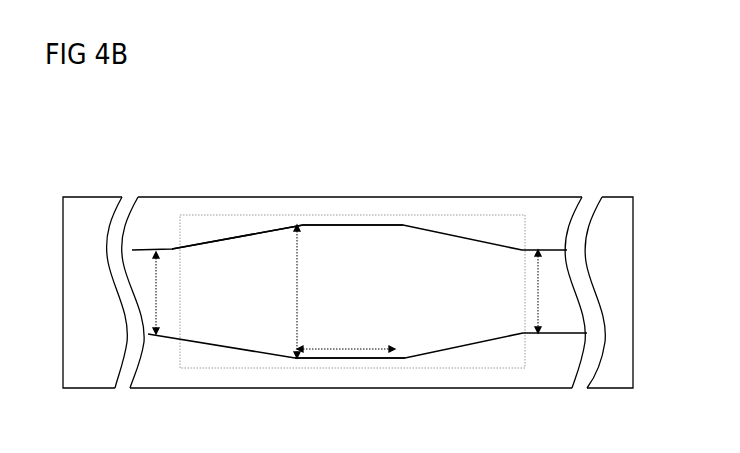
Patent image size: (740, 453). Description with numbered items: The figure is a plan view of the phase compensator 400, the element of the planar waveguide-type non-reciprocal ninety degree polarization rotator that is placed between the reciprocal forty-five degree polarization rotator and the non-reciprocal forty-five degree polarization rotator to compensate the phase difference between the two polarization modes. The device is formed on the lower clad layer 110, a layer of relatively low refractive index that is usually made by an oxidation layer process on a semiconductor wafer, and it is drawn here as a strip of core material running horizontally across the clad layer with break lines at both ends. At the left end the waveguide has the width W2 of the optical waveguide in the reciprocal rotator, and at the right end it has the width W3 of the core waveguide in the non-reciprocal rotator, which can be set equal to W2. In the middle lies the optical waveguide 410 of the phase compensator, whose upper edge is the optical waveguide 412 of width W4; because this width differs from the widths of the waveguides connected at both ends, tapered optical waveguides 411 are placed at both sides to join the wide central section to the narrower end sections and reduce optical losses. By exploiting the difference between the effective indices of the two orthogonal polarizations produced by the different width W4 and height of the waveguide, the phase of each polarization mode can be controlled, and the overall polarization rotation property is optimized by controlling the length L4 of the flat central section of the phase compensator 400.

The lower clad layer 110 is at (348, 292).
The phase compensator 400 is at (340, 215).
The optical waveguide 410 is at (350, 322).
The tapered optical waveguide 411 is at (227, 240).
The optical waveguide 412 is at (370, 225).
The width W2 is at (171, 293).
The width W3 is at (555, 291).
The width W4 is at (314, 291).
The length L4 is at (346, 336).